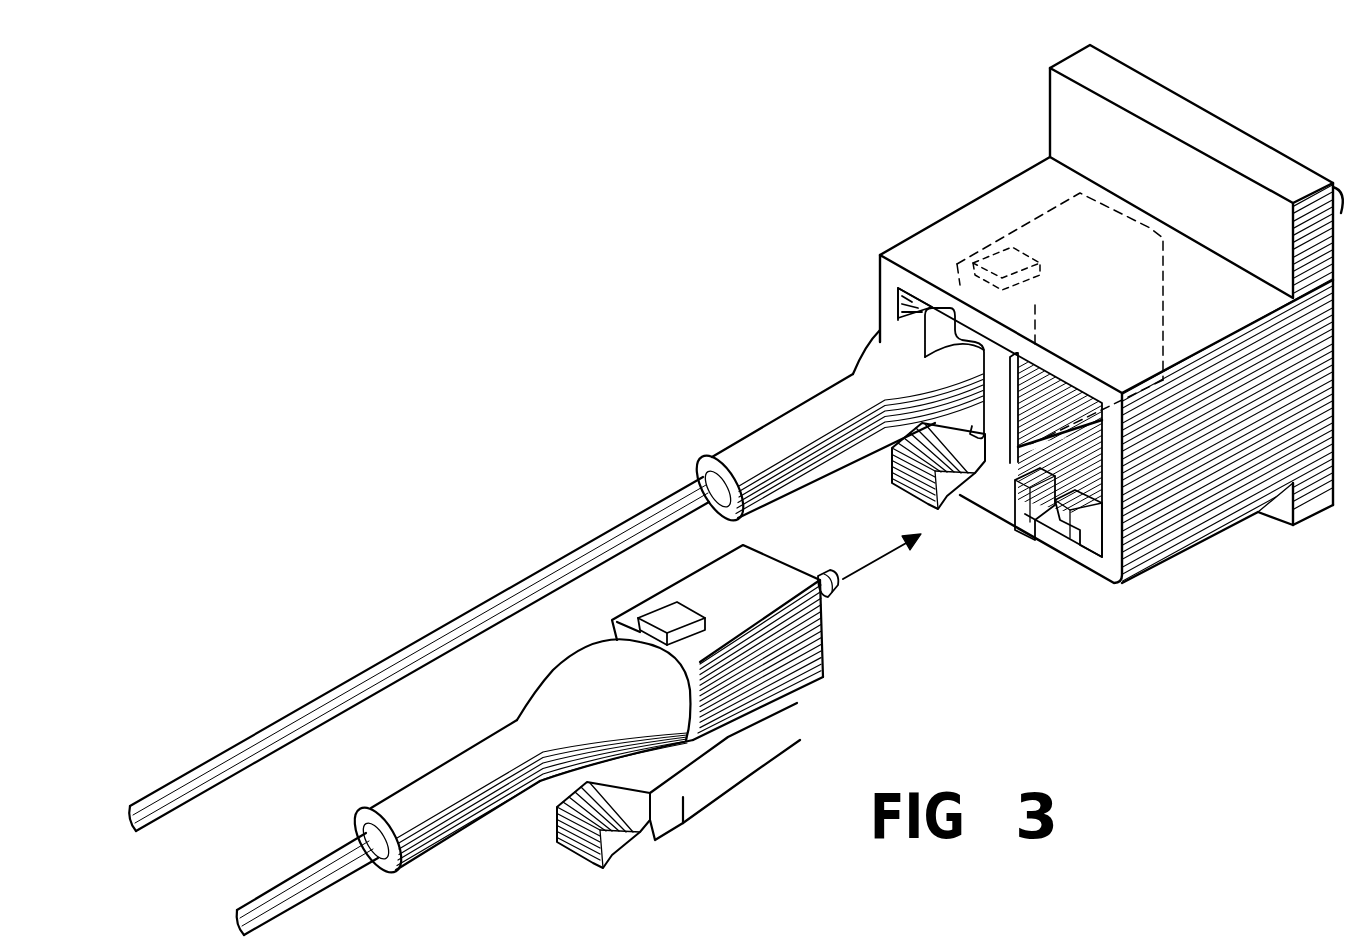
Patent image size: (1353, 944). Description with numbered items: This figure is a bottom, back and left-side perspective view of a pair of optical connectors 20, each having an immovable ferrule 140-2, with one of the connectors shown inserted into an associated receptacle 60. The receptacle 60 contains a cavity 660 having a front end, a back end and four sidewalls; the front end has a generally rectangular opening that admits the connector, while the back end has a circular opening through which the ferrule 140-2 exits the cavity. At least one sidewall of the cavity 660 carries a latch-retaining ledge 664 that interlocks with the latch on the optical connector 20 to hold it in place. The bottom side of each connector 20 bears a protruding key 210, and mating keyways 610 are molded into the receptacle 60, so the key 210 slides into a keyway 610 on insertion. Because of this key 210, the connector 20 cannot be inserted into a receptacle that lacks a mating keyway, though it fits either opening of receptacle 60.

The optical connector 20 is at (838, 348).
The receptacle 60 is at (1226, 578).
The protruding key 210 is at (683, 610).
The mating keyway 610 is at (943, 373).
The cavity 660 is at (1042, 524).
The latch-retaining ledge 664 is at (1032, 506).
The ferrule 140-2 is at (838, 586).